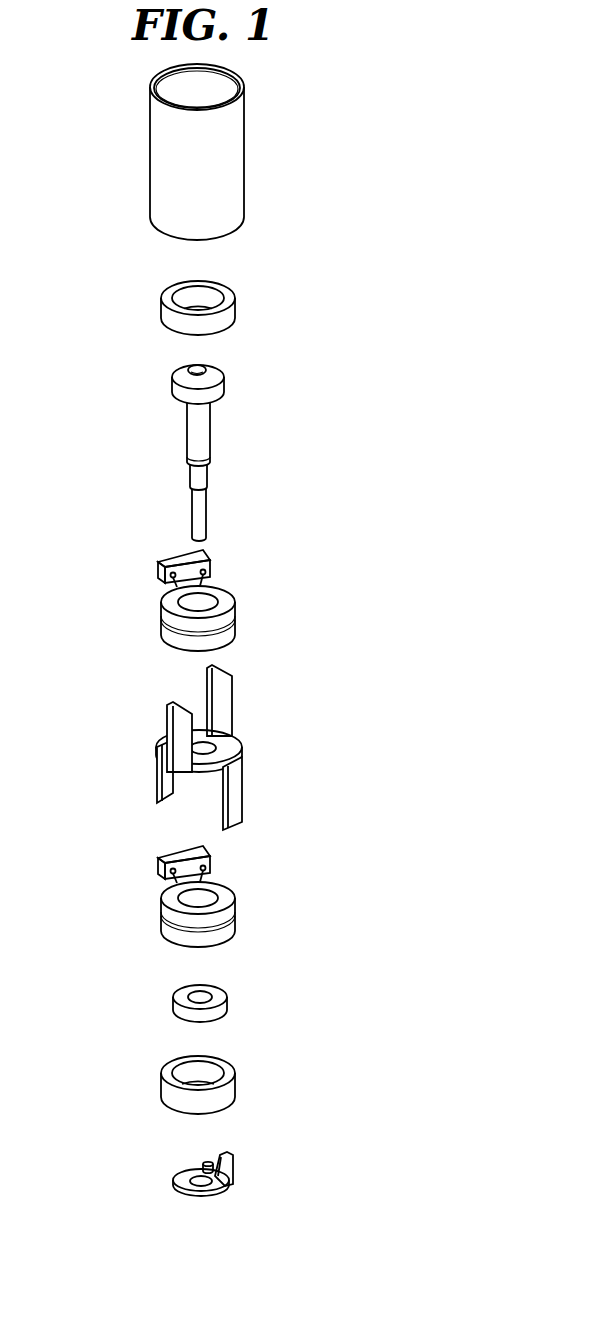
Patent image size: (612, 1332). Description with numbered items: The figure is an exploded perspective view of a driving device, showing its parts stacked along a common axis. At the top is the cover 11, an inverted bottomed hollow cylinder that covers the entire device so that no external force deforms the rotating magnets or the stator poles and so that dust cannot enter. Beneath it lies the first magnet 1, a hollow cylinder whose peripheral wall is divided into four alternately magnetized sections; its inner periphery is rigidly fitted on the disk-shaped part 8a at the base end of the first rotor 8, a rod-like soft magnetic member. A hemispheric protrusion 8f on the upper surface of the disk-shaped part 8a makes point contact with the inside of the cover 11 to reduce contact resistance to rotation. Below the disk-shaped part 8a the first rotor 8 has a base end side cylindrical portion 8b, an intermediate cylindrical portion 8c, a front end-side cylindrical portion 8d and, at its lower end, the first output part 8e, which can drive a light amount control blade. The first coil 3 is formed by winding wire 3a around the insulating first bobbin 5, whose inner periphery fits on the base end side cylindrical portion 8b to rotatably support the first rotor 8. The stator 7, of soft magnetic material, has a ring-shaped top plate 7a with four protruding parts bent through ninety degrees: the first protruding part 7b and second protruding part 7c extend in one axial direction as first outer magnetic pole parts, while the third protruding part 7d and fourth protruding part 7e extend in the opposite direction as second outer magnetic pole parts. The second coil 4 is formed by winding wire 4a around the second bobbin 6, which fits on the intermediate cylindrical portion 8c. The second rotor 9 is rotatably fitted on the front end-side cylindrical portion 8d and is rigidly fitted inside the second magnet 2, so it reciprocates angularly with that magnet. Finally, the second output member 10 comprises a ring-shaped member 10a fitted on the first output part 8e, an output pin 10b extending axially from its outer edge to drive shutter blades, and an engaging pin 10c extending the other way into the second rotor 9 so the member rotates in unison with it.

The first magnet 1 is at (232, 310).
The second magnet 2 is at (237, 1097).
The first coil 3 is at (212, 600).
The wire 3a is at (230, 628).
The second coil 4 is at (210, 896).
The wire 4a is at (230, 923).
The first bobbin 5 is at (230, 588).
The second bobbin 6 is at (163, 893).
The stator 7 is at (209, 740).
The top plate 7a is at (230, 747).
The first protruding part 7b is at (220, 695).
The second protruding part 7c is at (173, 728).
The third protruding part 7d is at (237, 795).
The fourth protruding part 7e is at (167, 780).
The first rotor 8 is at (227, 443).
The disk-shaped part 8a is at (218, 388).
The base end side cylindrical portion 8b is at (187, 427).
The intermediate cylindrical portion 8c is at (188, 452).
The front end-side cylindrical portion 8d is at (200, 477).
The first output part 8e is at (205, 515).
The hemispheric protrusion 8f is at (197, 368).
The second rotor 9 is at (222, 1012).
The second output member 10 is at (219, 1188).
The ring-shaped member 10a is at (187, 1190).
The output pin 10b is at (232, 1178).
The engaging pin 10c is at (205, 1164).
The cover 11 is at (231, 163).